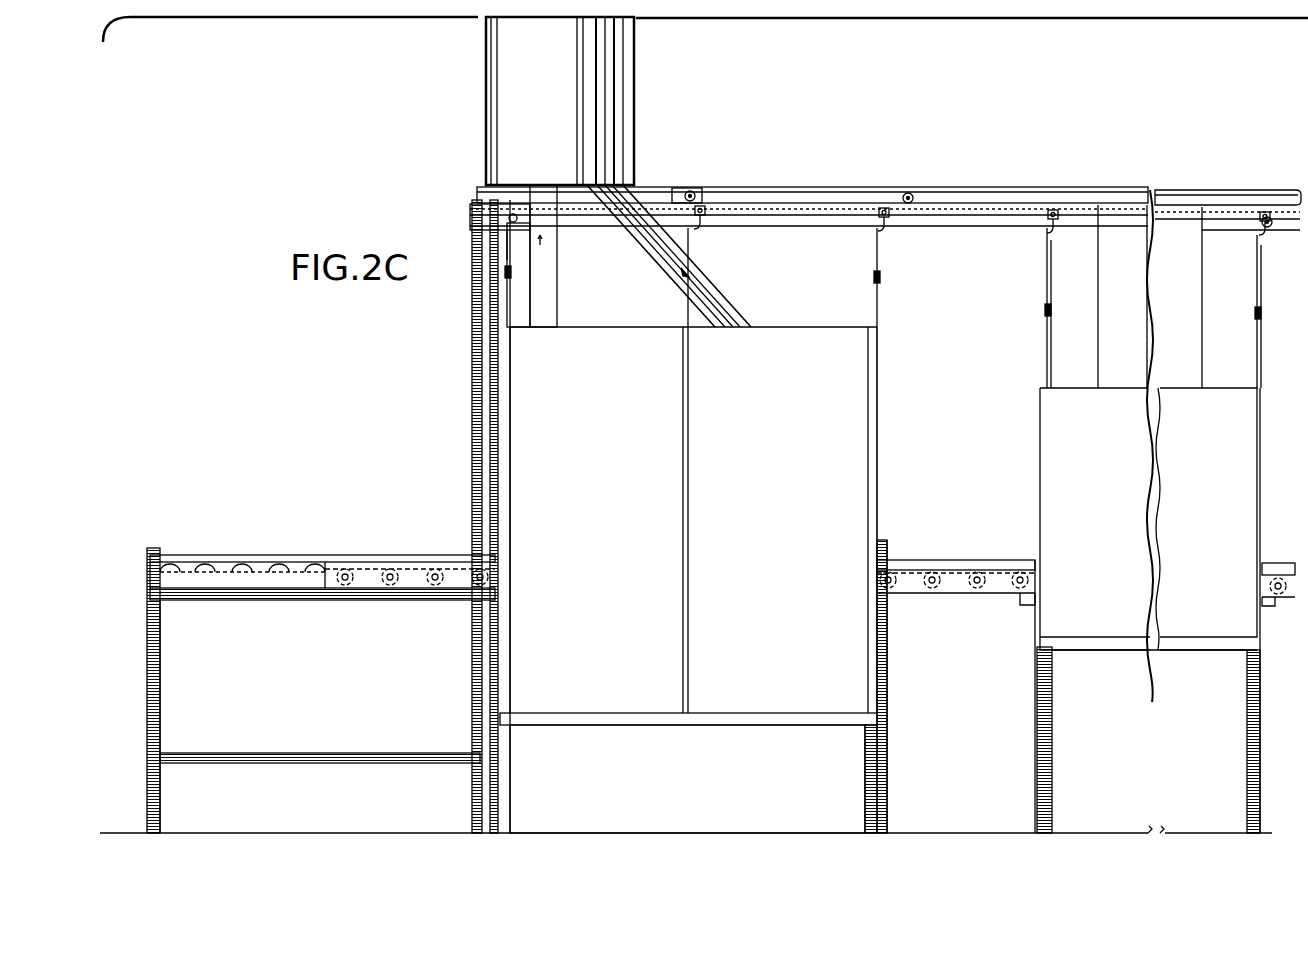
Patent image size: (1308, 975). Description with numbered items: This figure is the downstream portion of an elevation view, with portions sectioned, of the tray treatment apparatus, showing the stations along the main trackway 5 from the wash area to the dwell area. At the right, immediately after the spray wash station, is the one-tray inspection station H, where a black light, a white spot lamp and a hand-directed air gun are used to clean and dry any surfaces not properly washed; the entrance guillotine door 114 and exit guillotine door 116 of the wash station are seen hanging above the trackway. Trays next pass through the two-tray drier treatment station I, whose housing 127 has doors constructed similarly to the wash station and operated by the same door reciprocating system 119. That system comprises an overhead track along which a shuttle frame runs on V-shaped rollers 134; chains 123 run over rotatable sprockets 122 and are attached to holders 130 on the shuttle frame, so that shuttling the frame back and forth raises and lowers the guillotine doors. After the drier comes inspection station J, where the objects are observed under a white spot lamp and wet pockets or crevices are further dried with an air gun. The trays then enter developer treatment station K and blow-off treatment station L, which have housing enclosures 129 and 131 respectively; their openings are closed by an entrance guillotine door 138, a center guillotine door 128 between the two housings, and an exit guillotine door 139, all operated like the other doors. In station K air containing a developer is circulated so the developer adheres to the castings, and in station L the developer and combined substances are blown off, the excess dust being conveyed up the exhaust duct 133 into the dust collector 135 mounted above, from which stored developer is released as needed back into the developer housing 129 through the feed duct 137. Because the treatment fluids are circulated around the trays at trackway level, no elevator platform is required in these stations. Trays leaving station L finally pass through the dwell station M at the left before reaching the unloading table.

The dust collector 135 is at (560, 95).
The holders 130 is at (870, 190).
The door reciprocating system 119 is at (1012, 195).
The V-shaped rollers 134 is at (695, 192).
The center guillotine door 128 is at (688, 302).
The feed duct 137 is at (738, 313).
The exhaust duct 133 is at (556, 311).
The exit guillotine door 139 is at (506, 303).
The housing enclosure 131 is at (606, 525).
The housing enclosure 129 is at (791, 525).
The entrance guillotine door 138 is at (882, 313).
The sprockets 122 is at (702, 226).
The chains 123 is at (505, 244).
The housing 127 is at (1066, 448).
The exit guillotine door 116 is at (1046, 350).
The entrance guillotine door 114 is at (1257, 352).
The dwell station M is at (300, 548).
The inspection station J is at (939, 554).
The inspection station H is at (1277, 560).
The drier treatment station I is at (1211, 529).
The blow-off treatment station L is at (637, 185).
The developer treatment station K is at (794, 172).
The main trackway 5 is at (1285, 602).